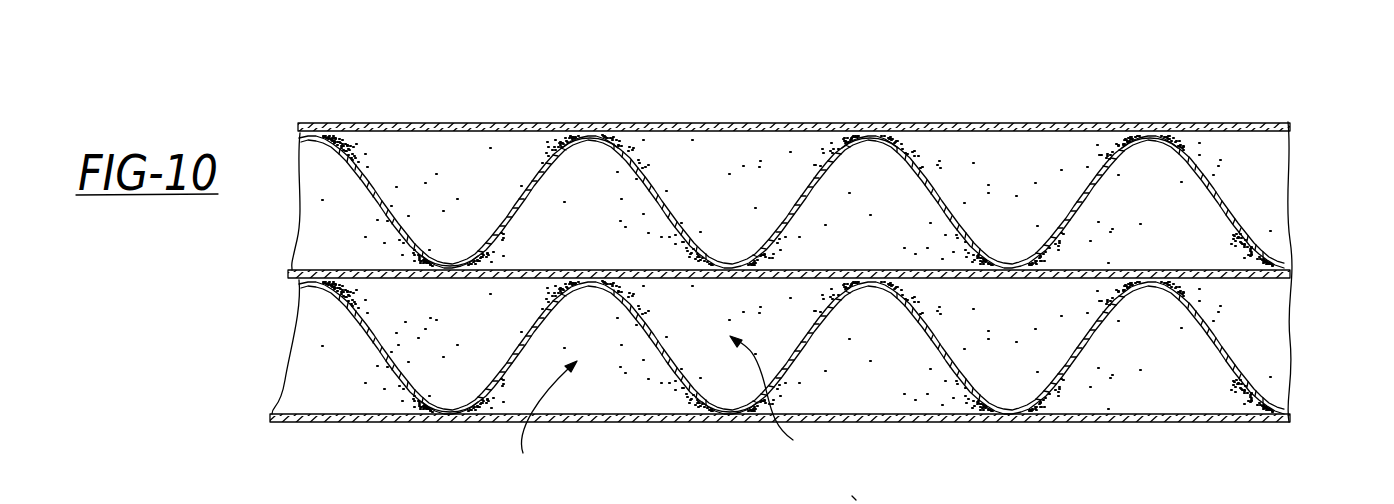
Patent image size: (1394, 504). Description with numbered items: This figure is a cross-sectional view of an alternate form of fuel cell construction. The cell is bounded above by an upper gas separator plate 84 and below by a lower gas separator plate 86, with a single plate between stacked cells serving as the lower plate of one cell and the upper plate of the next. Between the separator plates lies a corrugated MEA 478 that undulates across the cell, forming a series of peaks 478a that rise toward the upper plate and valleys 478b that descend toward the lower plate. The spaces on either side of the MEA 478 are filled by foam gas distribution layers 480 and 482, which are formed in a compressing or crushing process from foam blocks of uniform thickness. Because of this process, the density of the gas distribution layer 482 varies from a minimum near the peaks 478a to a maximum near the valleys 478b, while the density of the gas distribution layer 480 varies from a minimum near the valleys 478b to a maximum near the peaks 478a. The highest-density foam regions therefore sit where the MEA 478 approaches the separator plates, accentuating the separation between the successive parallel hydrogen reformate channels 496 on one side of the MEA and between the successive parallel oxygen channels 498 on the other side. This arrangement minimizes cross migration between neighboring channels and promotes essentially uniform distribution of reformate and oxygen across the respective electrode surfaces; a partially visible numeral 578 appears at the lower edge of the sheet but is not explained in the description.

The upper gas separator plate 84 is at (1233, 121).
The lower gas separator plate 86 is at (1267, 421).
The MEA 478 is at (943, 190).
The peaks of the MEA 478a is at (683, 242).
The valleys of the MEA 478b is at (460, 257).
The foam gas distribution layer 480 is at (410, 330).
The foam gas distribution layer 482 is at (315, 385).
The hydrogen reformate channels 496 is at (786, 400).
The oxygen channels 498 is at (534, 420).
The partial numeral 578 is at (879, 496).